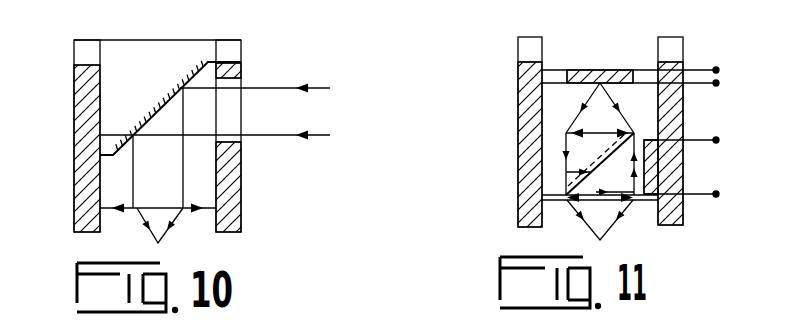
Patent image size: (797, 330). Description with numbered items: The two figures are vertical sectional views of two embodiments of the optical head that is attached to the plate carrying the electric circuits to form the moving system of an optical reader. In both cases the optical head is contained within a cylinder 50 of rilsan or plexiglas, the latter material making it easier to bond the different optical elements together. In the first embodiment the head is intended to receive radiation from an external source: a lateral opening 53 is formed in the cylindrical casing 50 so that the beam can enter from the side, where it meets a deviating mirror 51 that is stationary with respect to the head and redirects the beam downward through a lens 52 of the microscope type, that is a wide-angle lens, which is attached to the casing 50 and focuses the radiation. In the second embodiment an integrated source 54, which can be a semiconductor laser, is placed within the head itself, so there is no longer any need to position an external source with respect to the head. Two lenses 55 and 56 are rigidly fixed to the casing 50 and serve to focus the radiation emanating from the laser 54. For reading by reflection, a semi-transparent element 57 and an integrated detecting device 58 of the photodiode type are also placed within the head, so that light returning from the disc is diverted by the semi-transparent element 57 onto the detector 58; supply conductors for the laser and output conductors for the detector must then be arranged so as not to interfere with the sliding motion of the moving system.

In FIG. 10, the cylinder 50 is at (241, 185).
In FIG. 11, the cylinder 50 is at (518, 118).
In FIG. 10, the deviating mirror 51 is at (143, 117).
In FIG. 10, the lens 52 is at (147, 208).
In FIG. 10, the lateral opening 53 is at (241, 82).
In FIG. 11, the integrated source 54 is at (612, 70).
In FIG. 11, the lens 55 is at (640, 111).
In FIG. 11, the lens 56 is at (612, 206).
In FIG. 11, the semi-transparent element 57 is at (574, 175).
In FIG. 11, the integrated detecting device 58 is at (658, 165).